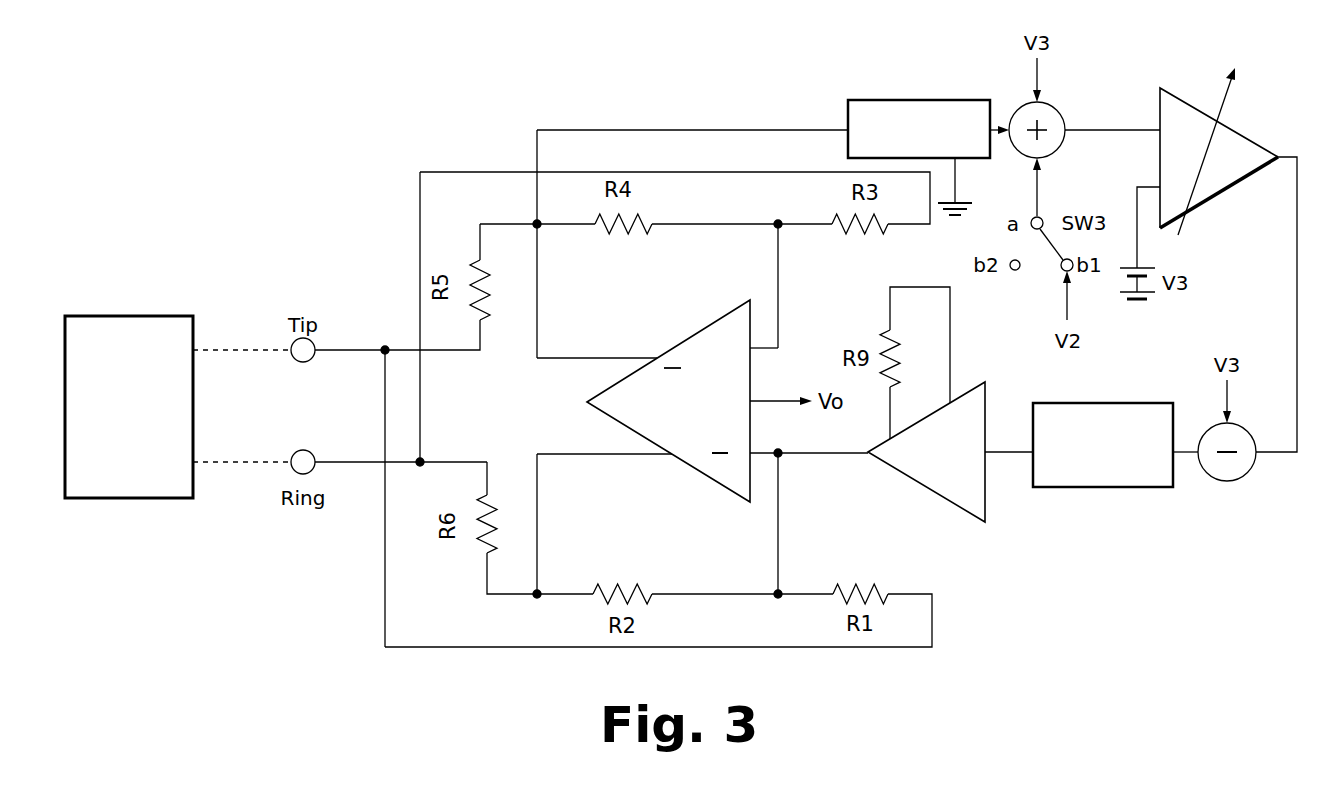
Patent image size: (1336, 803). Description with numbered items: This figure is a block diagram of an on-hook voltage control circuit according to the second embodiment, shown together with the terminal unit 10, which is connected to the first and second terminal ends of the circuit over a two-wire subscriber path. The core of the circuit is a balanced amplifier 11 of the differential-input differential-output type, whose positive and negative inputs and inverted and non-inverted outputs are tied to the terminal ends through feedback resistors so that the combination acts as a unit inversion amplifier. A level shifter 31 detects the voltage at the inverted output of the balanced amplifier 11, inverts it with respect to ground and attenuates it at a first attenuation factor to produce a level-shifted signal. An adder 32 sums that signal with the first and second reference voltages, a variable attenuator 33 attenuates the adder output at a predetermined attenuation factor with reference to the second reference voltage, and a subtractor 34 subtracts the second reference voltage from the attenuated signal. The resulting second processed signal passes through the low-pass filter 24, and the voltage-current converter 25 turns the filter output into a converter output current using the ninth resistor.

The terminal unit 10 is at (125, 316).
The balanced amplifier 11 is at (672, 348).
The low-pass filter 24 is at (1093, 487).
The voltage-current converter 25 is at (905, 476).
The level shifter 31 is at (917, 100).
The adder 32 is at (1028, 100).
The variable attenuator 33 is at (1228, 190).
The subtractor 34 is at (1226, 481).